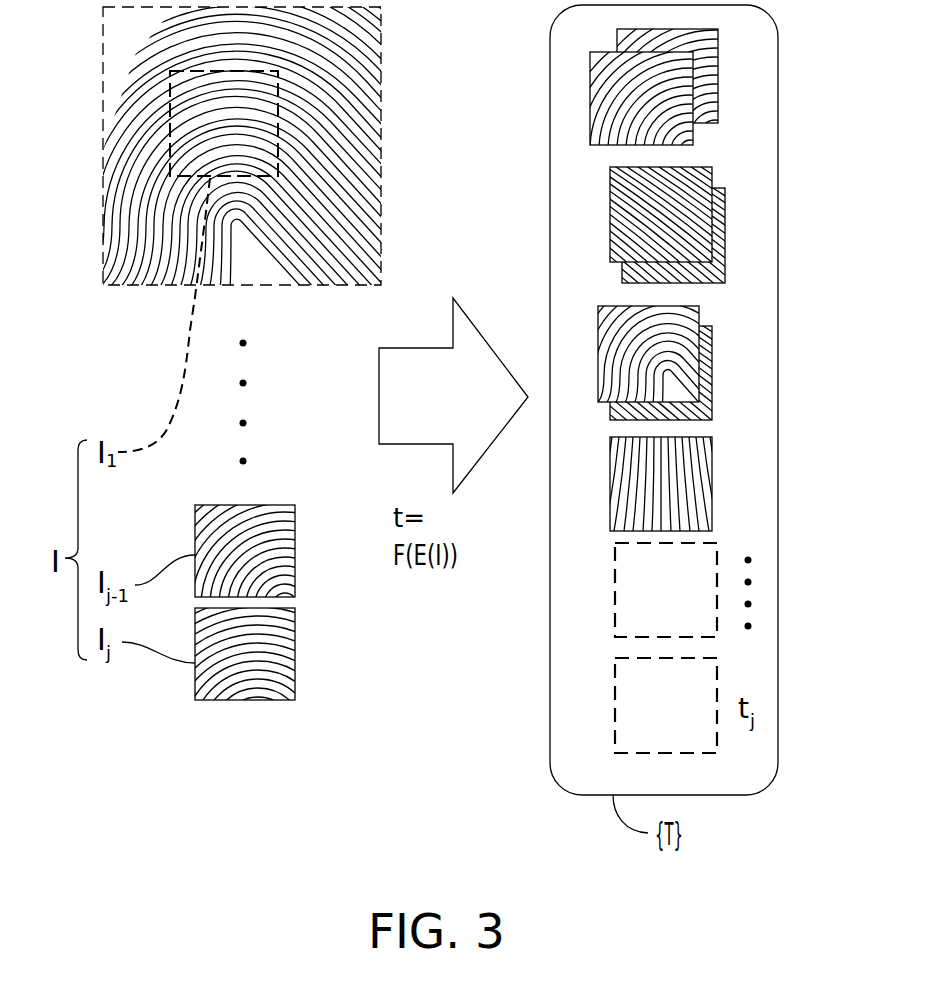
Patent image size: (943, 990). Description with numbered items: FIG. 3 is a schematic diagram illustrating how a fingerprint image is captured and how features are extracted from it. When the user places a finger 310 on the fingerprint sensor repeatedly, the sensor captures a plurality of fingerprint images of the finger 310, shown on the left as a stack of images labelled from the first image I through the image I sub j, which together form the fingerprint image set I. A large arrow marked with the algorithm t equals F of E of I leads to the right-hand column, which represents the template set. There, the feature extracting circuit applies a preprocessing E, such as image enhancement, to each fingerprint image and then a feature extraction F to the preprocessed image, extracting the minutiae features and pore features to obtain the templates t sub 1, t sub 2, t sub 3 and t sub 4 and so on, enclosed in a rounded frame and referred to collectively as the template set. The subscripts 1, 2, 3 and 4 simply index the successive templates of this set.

The finger 310 is at (381, 95).
The template t1 1 is at (705, 140).
The template t2 2 is at (665, 225).
The template t3 3 is at (660, 342).
The template t4 4 is at (678, 484).